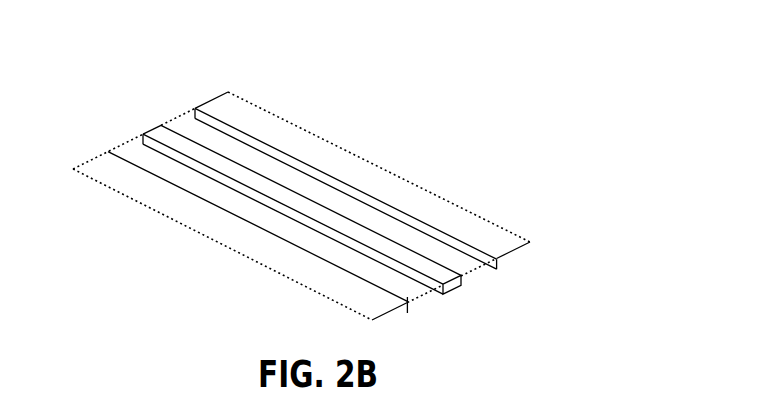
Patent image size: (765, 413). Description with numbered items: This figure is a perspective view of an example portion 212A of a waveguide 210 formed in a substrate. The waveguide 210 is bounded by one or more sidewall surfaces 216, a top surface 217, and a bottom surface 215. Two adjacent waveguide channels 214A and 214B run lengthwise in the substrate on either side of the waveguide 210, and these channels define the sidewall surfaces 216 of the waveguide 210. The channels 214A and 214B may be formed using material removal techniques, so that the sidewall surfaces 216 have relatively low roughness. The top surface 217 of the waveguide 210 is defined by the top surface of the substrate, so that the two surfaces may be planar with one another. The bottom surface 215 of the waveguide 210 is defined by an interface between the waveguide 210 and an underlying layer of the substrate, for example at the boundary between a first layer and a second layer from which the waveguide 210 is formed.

The waveguide 210 is at (152, 118).
The portion of the waveguide 212A is at (143, 72).
The waveguide channel 214A is at (414, 303).
The waveguide channel 214B is at (472, 273).
The bottom surface 215 is at (462, 278).
The sidewall surface 216 is at (282, 210).
The top surface 217 is at (212, 165).